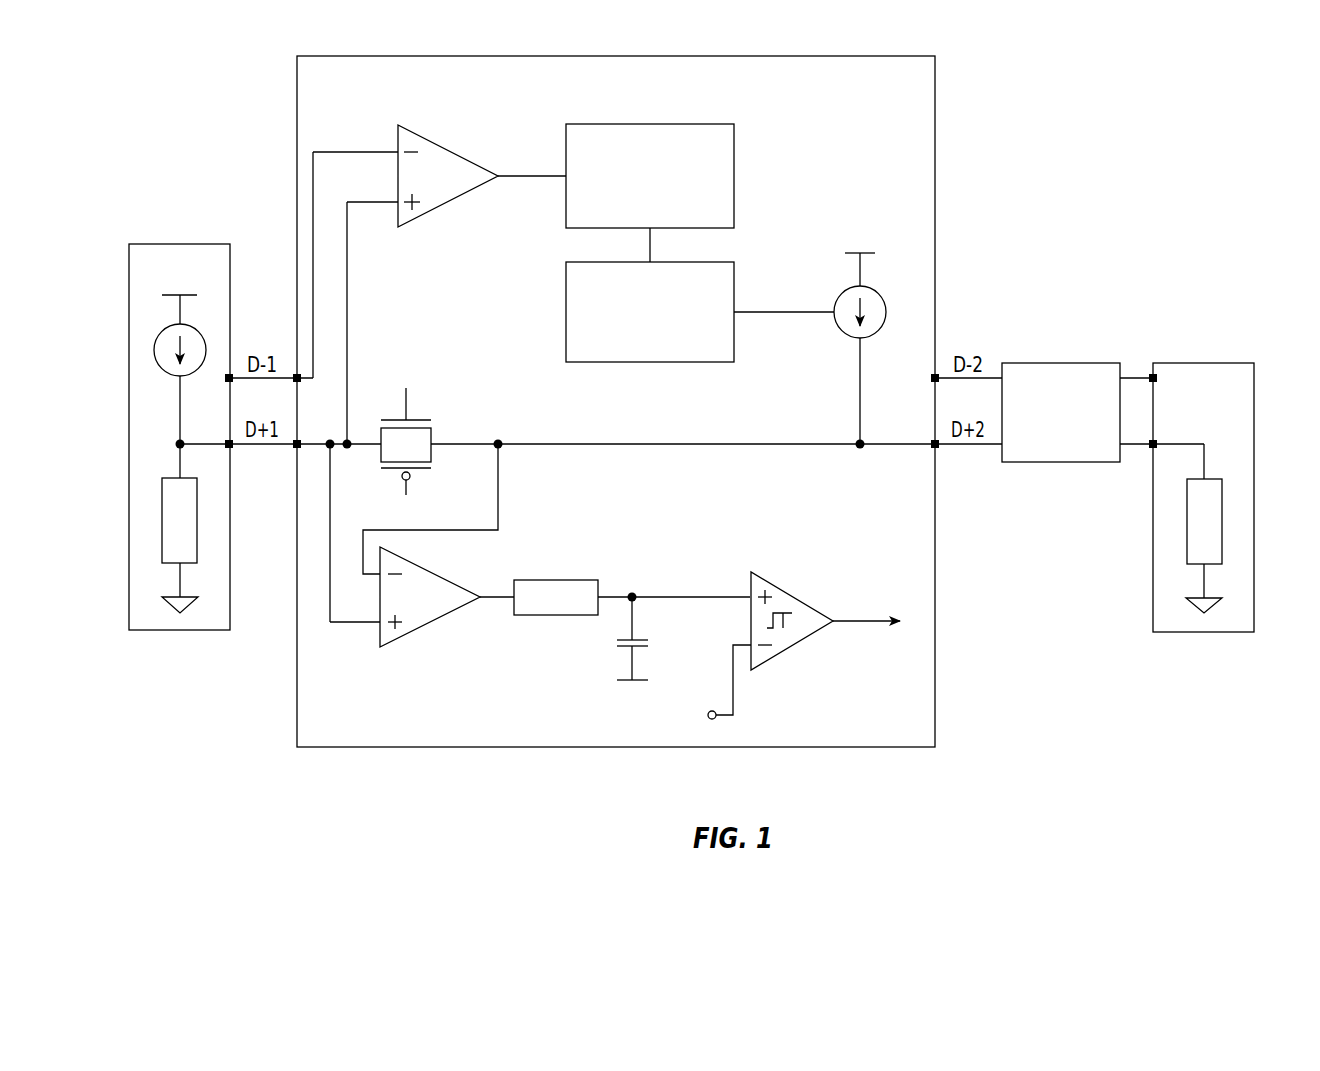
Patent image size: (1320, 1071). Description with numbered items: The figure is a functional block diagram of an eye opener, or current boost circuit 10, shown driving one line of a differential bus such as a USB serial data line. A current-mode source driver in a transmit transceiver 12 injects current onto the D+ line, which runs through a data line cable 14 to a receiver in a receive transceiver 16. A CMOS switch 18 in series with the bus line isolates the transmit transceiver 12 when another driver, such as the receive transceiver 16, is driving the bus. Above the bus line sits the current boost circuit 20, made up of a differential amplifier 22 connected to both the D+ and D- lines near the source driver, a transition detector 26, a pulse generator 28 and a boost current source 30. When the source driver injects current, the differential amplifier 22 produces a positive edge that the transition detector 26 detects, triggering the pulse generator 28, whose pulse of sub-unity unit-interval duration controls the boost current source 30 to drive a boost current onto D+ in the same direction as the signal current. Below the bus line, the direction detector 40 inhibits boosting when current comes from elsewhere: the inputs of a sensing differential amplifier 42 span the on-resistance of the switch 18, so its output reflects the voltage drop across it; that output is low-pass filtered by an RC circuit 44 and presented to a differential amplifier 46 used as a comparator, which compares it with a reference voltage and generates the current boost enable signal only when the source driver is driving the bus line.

The current boost circuit 10 is at (855, 96).
The transmit transceiver 12 is at (180, 244).
The data line cable 14 is at (1070, 363).
The receive transceiver 16 is at (1206, 363).
The CMOS switch 18 is at (432, 435).
The current boost circuit 20 is at (833, 217).
The differential amplifier 22 is at (462, 153).
The transition detector 26 is at (734, 160).
The pulse generator 28 is at (734, 335).
The boost current source 30 is at (880, 292).
The direction detector 40 is at (788, 562).
The differential amplifier 42 is at (423, 627).
The RC circuit 44 is at (588, 648).
The differential amplifier 46 is at (793, 595).